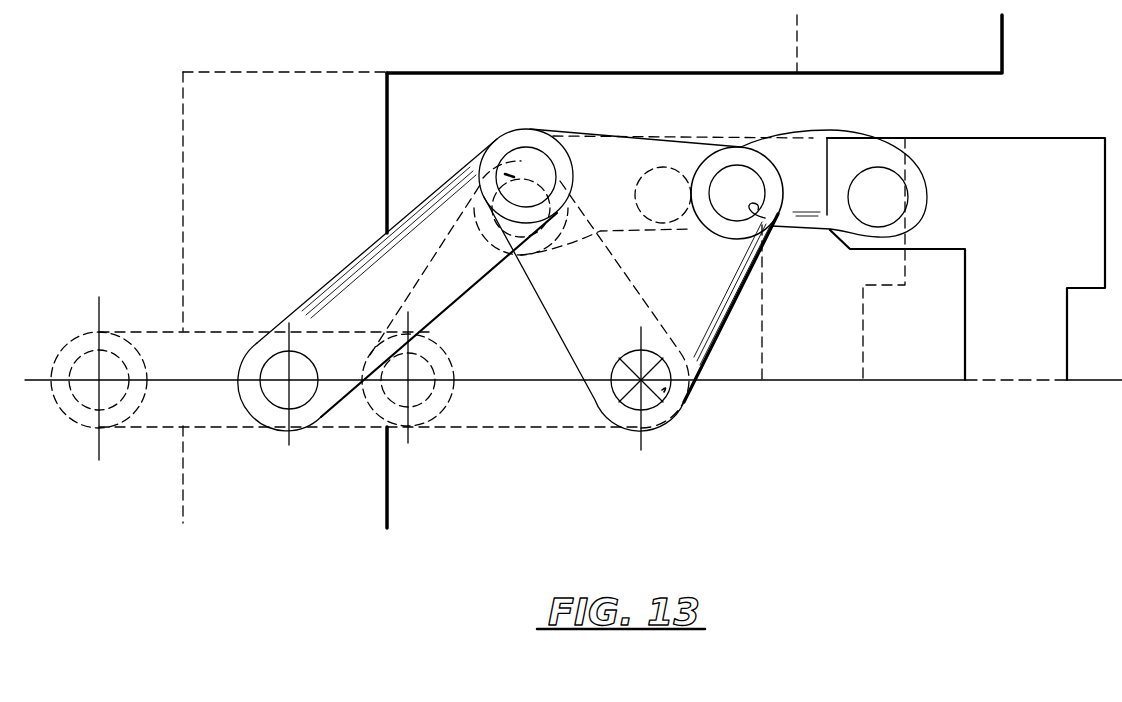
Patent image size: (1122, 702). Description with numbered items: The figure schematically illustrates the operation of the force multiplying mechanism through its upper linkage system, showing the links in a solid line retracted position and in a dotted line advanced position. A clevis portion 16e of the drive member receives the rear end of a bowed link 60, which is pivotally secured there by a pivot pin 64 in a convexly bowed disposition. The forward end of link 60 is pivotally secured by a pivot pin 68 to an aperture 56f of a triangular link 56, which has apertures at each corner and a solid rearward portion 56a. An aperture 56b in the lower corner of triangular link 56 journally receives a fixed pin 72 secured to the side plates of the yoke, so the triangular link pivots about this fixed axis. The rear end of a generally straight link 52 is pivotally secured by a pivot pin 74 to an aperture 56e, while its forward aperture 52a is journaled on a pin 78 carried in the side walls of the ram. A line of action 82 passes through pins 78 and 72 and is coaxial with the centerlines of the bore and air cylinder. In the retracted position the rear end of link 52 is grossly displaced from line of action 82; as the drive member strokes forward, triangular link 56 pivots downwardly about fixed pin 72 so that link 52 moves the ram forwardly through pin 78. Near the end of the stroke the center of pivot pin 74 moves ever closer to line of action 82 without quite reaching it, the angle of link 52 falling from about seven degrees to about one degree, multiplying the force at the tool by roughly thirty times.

The clevis portion 16e is at (965, 130).
The link 52 is at (357, 257).
The forward aperture 52a is at (268, 375).
The triangular link 56 is at (548, 320).
The solid rearward portion 56a is at (670, 405).
The aperture 56b is at (620, 398).
The aperture 56e is at (775, 222).
The aperture 56f is at (545, 157).
The link 60 is at (812, 131).
The pivot pin 64 is at (893, 197).
The pivot pin 68 is at (727, 187).
The fixed pin 72 is at (662, 390).
The pivot pin 74 is at (513, 176).
The pin 78 is at (300, 393).
The line of action 82 is at (503, 377).